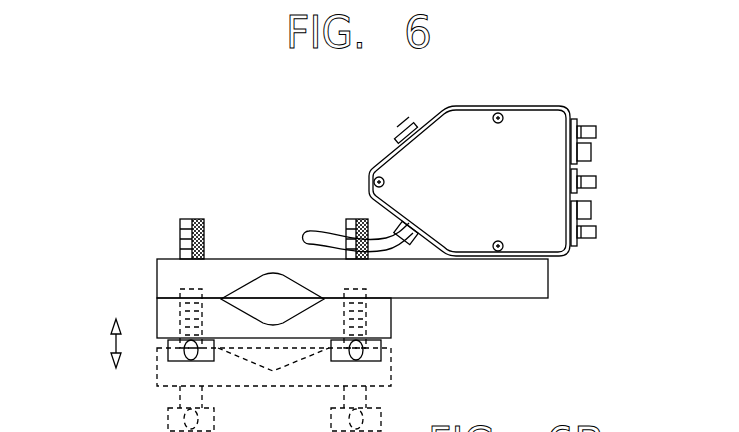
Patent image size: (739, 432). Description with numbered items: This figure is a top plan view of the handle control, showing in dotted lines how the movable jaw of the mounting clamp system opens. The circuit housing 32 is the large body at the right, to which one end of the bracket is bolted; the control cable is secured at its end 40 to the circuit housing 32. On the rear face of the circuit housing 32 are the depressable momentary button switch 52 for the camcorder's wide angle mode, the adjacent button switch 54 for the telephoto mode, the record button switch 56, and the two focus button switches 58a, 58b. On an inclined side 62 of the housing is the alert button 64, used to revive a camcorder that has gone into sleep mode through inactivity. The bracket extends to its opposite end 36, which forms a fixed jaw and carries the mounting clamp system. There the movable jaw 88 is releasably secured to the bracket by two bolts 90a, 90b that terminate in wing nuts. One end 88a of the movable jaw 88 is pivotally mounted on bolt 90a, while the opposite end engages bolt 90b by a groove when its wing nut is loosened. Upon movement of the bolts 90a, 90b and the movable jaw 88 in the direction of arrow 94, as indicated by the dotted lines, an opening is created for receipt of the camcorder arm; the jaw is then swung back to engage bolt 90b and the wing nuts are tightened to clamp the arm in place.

The circuit housing 32 is at (466, 183).
The opposite end of the bracket 36 is at (168, 272).
The end of the control cable 40 is at (395, 232).
The momentary button switch 52 is at (585, 212).
The button switch 54 is at (585, 150).
The record button switch 56 is at (596, 232).
The focus button switch 58a is at (596, 181).
The focus button switch 58b is at (588, 125).
The inclined side of circuit housing 62 is at (422, 118).
The alert button 64 is at (403, 130).
The movable jaw 88 is at (398, 318).
The end of movable jaw 88a is at (163, 310).
The bolt 90a is at (193, 217).
The bolt 90b is at (352, 218).
The arrow 94 is at (112, 343).